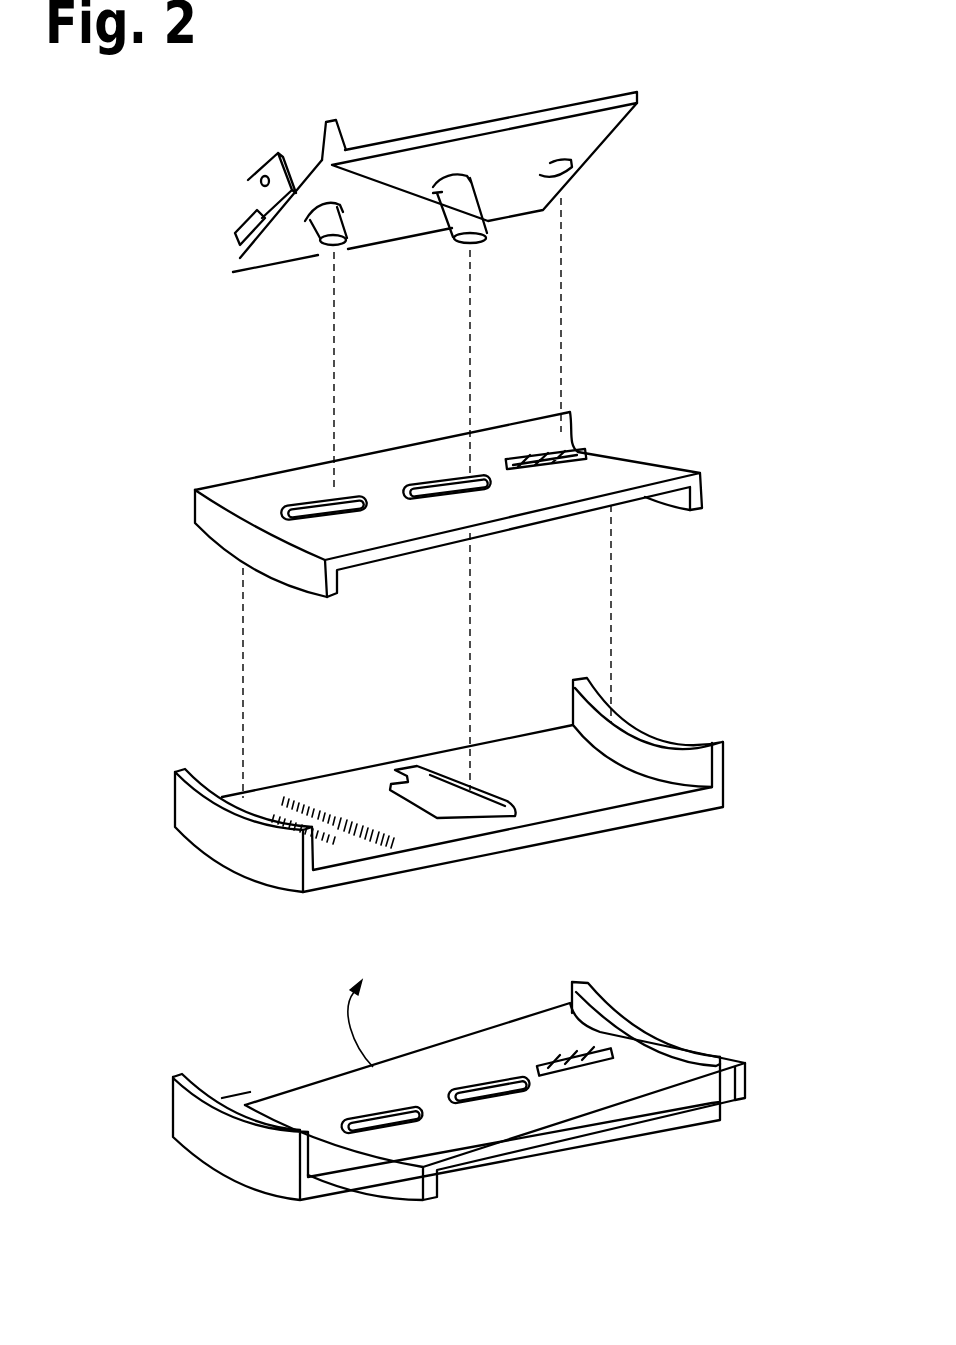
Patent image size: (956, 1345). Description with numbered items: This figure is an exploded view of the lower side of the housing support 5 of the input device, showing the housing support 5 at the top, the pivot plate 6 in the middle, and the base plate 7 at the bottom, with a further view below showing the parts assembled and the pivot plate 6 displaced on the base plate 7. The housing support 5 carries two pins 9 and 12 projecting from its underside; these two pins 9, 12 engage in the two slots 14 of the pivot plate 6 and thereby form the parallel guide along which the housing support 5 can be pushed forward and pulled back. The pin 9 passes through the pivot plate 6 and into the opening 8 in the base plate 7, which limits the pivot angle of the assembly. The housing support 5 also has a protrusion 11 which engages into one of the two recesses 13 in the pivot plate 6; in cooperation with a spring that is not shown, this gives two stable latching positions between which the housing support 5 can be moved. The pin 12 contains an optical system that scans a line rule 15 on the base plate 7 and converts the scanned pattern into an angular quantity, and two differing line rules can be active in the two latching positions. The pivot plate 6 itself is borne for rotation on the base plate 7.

The housing support 5 is at (235, 268).
The pivot plate 6 is at (207, 517).
The base plate 7 is at (207, 825).
The opening 8 is at (513, 803).
The pin 9 is at (476, 242).
The protrusion 11 is at (560, 180).
The pin 12 is at (335, 245).
The recesses 13 is at (563, 453).
The slots 14 is at (447, 480).
The line rule 15 is at (390, 838).